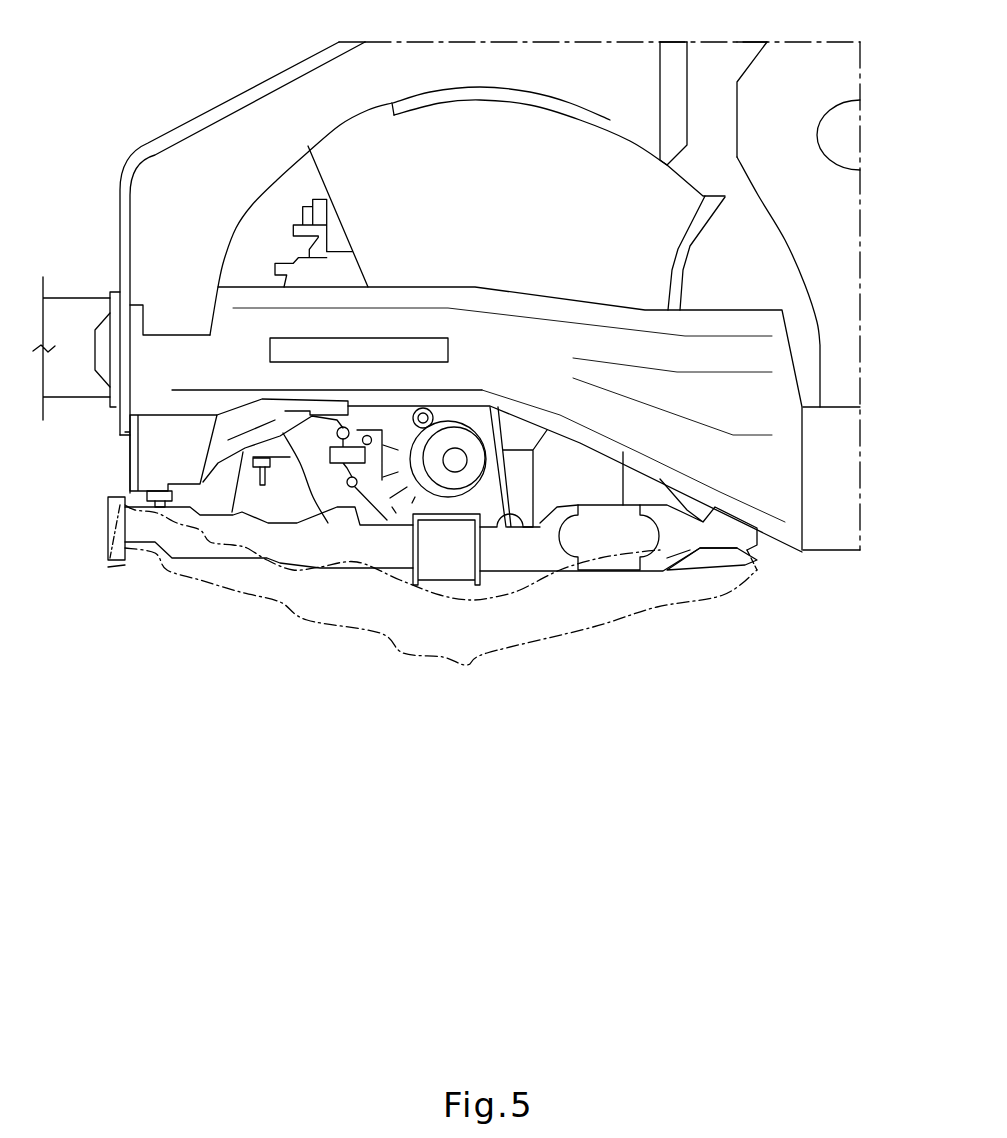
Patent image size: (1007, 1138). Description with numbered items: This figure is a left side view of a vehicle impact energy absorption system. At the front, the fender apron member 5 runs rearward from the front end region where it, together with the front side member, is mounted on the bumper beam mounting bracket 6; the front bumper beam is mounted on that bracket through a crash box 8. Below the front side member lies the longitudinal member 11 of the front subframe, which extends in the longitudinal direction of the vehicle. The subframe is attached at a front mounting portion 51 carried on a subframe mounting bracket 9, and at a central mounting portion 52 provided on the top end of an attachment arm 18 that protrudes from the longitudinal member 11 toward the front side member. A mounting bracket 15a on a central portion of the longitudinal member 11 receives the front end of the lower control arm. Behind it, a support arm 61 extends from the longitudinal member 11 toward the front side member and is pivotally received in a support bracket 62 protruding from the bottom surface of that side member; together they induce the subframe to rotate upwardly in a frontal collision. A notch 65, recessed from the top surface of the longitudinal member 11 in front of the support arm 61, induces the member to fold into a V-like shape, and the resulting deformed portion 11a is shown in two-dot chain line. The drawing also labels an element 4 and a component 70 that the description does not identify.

The vehicle body side member 4 is at (833, 530).
The fender apron member 5 is at (257, 120).
The bumper beam mounting bracket 6 is at (115, 398).
The crash box 8 is at (70, 318).
The subframe mounting bracket 9 is at (153, 465).
The longitudinal member 11 is at (377, 543).
The deformed portion of longitudinal member 11a is at (443, 657).
The mounting bracket 15a is at (483, 560).
The attachment arm 18 is at (273, 503).
The front mounting portion 51 is at (160, 503).
The central mounting portion 52 is at (262, 485).
The support arm 61 is at (525, 495).
The support bracket 62 is at (527, 430).
The notch 65 is at (520, 530).
The bracket assembly 70 is at (402, 502).